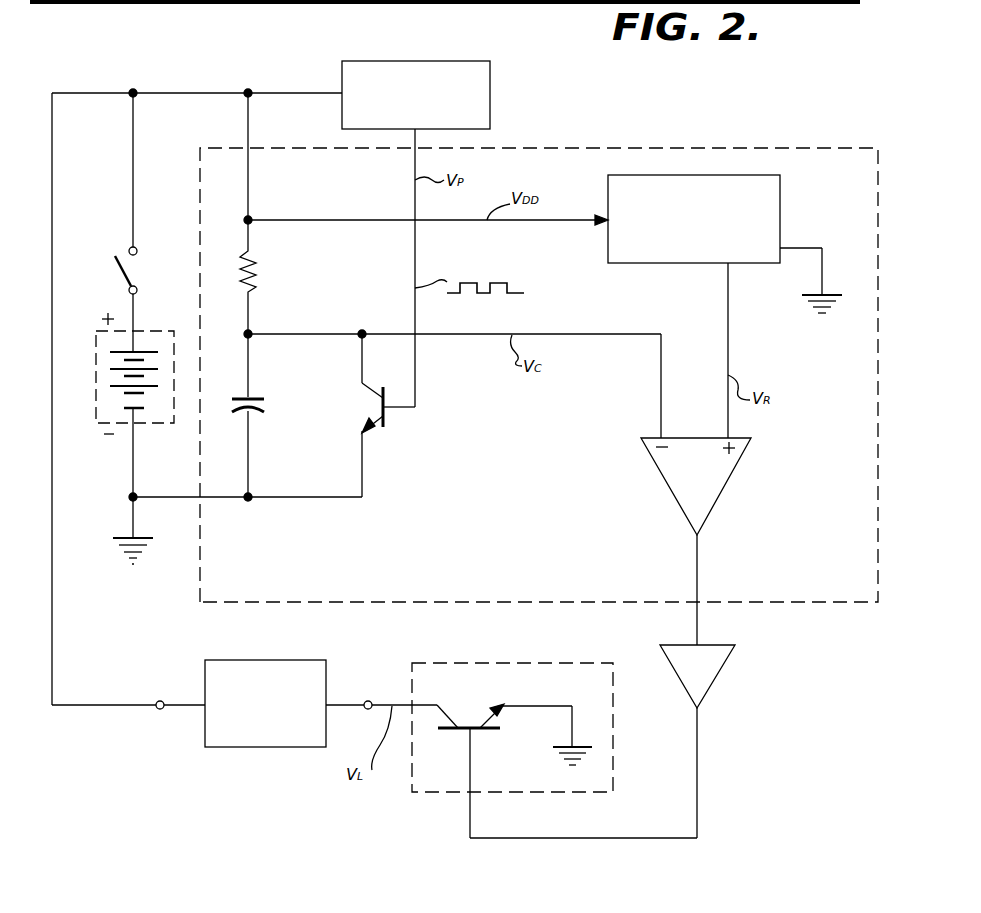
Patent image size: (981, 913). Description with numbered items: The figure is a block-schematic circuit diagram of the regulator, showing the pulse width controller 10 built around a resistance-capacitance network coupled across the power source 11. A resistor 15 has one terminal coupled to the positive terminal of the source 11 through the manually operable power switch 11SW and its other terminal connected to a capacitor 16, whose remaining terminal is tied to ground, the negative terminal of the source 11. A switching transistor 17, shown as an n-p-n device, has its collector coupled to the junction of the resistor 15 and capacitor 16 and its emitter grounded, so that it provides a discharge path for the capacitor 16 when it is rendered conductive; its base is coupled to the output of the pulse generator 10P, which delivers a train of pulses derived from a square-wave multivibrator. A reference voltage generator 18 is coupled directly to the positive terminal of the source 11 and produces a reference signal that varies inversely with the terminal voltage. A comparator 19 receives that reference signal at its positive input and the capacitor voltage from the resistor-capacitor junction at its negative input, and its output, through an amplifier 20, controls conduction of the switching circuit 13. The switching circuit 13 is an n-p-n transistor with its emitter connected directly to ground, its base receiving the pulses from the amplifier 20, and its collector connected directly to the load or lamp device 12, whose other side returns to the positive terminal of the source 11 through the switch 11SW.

The pulse width controller 10 is at (788, 130).
The pulse generator 10P is at (492, 84).
The power source 11 is at (96, 423).
The power switch 11SW is at (125, 267).
The load or lamp device 12 is at (292, 660).
The switching circuit 13 is at (548, 662).
The resistor 15 is at (256, 262).
The capacitor 16 is at (255, 414).
The switching transistor 17 is at (385, 418).
The reference voltage generator 18 is at (782, 190).
The comparison circuit 19 is at (722, 494).
The amplifier 20 is at (712, 684).